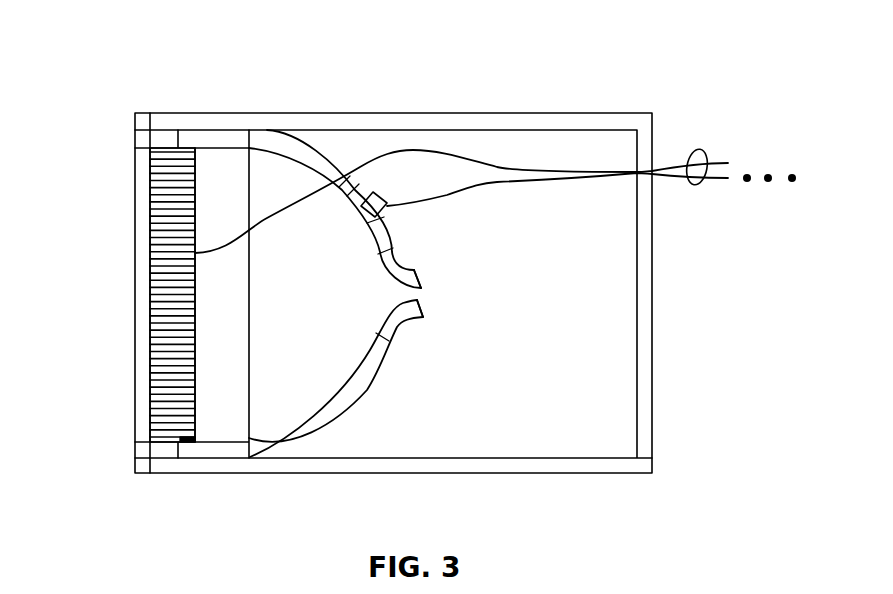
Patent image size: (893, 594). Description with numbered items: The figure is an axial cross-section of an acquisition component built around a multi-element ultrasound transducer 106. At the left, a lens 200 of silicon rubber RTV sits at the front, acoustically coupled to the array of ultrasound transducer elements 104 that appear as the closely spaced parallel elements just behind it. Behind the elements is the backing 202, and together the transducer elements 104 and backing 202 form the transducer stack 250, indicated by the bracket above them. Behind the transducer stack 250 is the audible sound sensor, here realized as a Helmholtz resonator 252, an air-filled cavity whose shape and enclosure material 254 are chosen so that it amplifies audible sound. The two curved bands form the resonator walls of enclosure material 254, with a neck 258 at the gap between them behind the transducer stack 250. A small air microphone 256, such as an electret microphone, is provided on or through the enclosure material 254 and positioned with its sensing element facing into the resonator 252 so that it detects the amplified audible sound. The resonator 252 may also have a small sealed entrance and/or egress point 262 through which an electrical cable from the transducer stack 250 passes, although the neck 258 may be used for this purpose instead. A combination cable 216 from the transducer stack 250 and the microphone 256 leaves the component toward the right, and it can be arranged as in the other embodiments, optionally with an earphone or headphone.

The ultrasound transducer elements 104 is at (153, 163).
The multi-element ultrasound transducer 106 is at (150, 285).
The lens 200 is at (147, 290).
The backing 202 is at (227, 405).
The combination cable 216 is at (700, 149).
The transducer stack 250 is at (250, 107).
The Helmholtz resonator 252 is at (340, 368).
The enclosure material 254 is at (318, 145).
The air microphone 256 is at (385, 195).
The neck 258 is at (414, 293).
The sealed entrance and/or egress point 262 is at (352, 172).